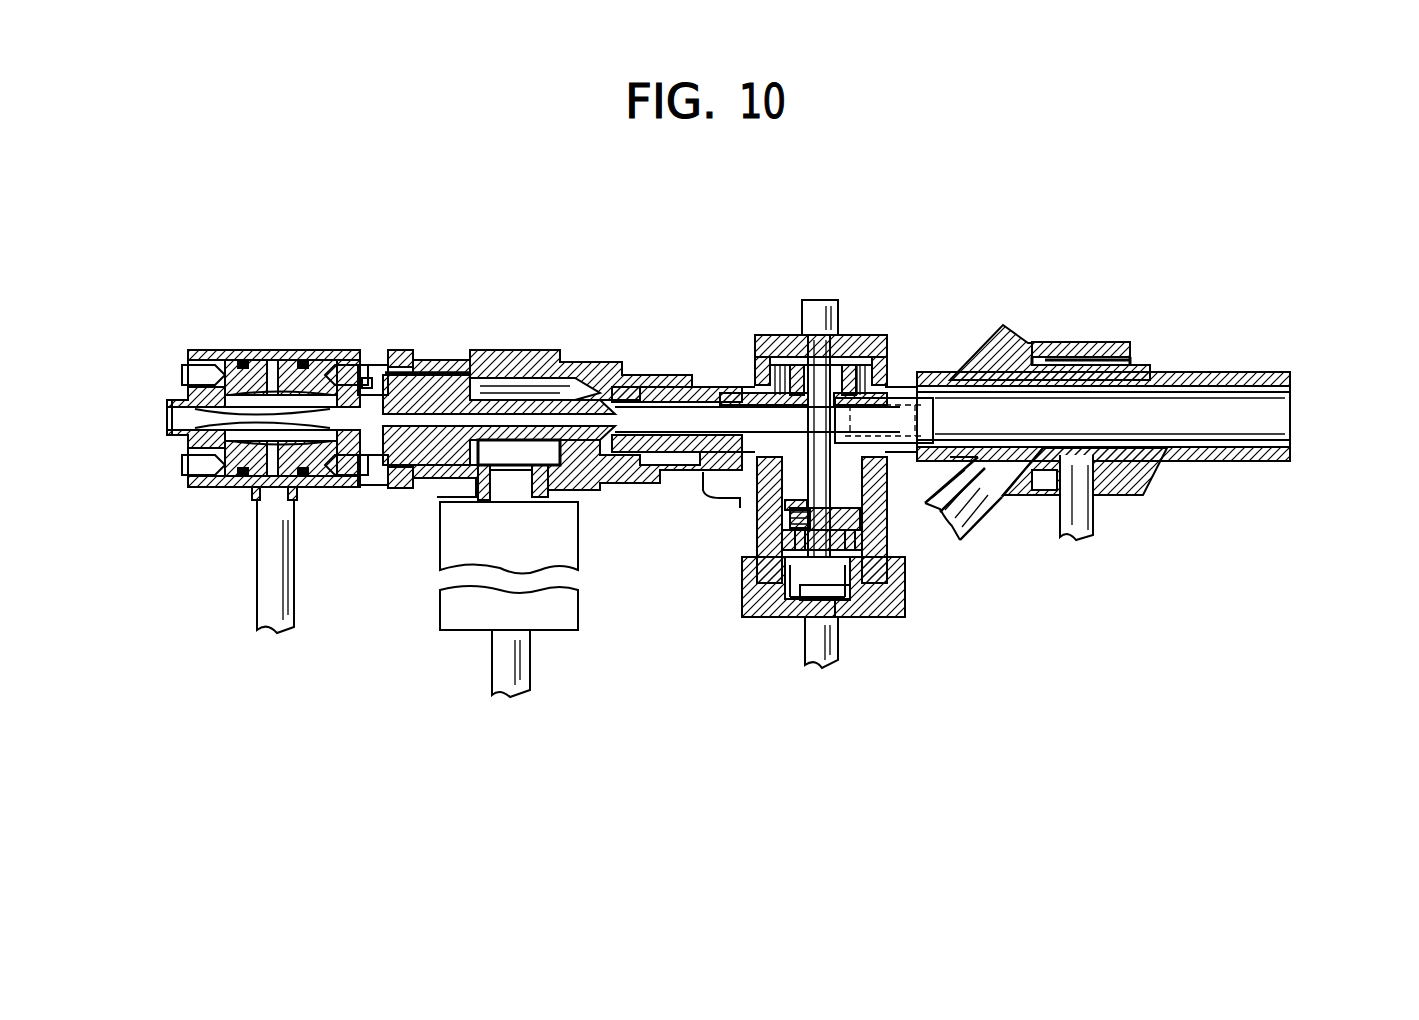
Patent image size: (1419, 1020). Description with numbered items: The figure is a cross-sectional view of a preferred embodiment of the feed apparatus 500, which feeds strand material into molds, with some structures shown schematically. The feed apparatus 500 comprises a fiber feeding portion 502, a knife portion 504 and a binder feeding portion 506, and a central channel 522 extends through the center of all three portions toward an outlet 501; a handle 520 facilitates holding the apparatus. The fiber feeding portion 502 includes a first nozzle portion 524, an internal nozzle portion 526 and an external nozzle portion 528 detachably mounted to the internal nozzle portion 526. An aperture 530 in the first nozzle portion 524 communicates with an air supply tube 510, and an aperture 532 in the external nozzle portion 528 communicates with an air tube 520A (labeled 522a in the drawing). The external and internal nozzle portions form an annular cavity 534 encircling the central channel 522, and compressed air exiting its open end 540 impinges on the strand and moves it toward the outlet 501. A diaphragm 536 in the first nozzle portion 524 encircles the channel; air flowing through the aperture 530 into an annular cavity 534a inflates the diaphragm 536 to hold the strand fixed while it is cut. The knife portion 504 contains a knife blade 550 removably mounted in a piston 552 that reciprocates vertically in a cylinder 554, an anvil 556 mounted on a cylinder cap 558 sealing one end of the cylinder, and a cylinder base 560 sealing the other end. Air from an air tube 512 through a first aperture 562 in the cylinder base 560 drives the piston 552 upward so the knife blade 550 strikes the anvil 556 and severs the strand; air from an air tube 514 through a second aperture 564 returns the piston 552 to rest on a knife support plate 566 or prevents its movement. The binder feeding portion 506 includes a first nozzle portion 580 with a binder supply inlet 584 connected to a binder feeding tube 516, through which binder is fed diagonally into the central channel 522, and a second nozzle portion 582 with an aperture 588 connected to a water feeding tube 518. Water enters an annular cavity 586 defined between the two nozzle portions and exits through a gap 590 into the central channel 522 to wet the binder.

The feed apparatus 500 is at (1034, 197).
The outlet 501 is at (1292, 400).
The fiber feeding portion 502 is at (439, 307).
The knife portion 504 is at (832, 277).
The binder feeding portion 506 is at (1107, 311).
The air supply tube 510 is at (262, 608).
The air tube 512 is at (840, 648).
The air tube 514 is at (730, 495).
The binder feeding tube 516 is at (982, 468).
The water feeding tube 518 is at (1097, 517).
The handle 520 is at (440, 603).
The air tube 520A is at (533, 673).
The central channel 522 is at (690, 426).
The conduit inlet 522a is at (383, 470).
The first nozzle portion 524 is at (222, 492).
The internal nozzle portion 526 is at (483, 372).
The external nozzle portion 528 is at (597, 342).
The aperture 530 is at (275, 490).
The aperture 532 is at (512, 485).
The annular cavity 534 is at (548, 380).
The annular cavity 534a is at (273, 385).
The diaphragm 536 is at (333, 360).
The open end 540 is at (653, 382).
The knife blade 550 is at (832, 488).
The piston 552 is at (868, 540).
The cylinder 554 is at (753, 583).
The anvil 556 is at (823, 365).
The cylinder cap 558 is at (787, 340).
The cylinder base 560 is at (877, 618).
The first aperture 562 is at (823, 655).
The second aperture 564 is at (753, 540).
The knife support plate 566 is at (797, 612).
The first nozzle portion 580 is at (978, 345).
The second nozzle portion 582 is at (1133, 477).
The binder supply inlet 584 is at (1003, 518).
The annular cavity 586 is at (1100, 365).
The aperture 588 is at (1077, 485).
The gap 590 is at (1127, 420).